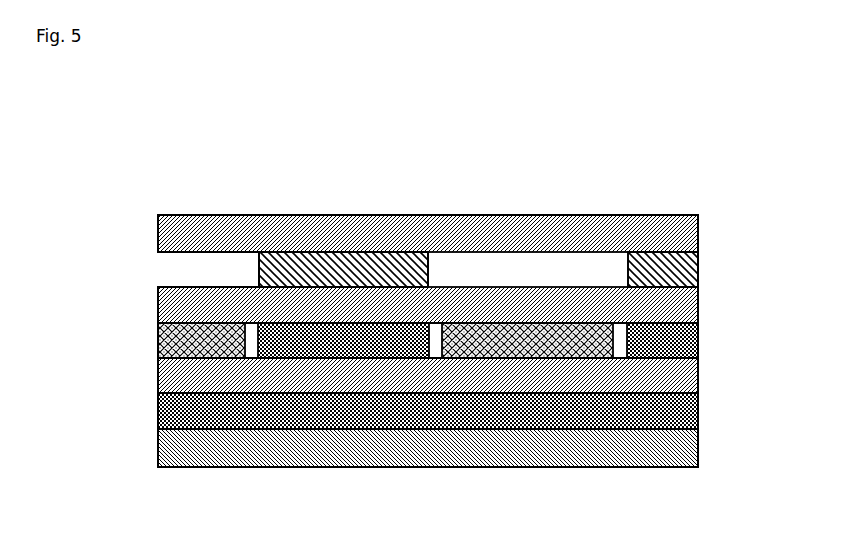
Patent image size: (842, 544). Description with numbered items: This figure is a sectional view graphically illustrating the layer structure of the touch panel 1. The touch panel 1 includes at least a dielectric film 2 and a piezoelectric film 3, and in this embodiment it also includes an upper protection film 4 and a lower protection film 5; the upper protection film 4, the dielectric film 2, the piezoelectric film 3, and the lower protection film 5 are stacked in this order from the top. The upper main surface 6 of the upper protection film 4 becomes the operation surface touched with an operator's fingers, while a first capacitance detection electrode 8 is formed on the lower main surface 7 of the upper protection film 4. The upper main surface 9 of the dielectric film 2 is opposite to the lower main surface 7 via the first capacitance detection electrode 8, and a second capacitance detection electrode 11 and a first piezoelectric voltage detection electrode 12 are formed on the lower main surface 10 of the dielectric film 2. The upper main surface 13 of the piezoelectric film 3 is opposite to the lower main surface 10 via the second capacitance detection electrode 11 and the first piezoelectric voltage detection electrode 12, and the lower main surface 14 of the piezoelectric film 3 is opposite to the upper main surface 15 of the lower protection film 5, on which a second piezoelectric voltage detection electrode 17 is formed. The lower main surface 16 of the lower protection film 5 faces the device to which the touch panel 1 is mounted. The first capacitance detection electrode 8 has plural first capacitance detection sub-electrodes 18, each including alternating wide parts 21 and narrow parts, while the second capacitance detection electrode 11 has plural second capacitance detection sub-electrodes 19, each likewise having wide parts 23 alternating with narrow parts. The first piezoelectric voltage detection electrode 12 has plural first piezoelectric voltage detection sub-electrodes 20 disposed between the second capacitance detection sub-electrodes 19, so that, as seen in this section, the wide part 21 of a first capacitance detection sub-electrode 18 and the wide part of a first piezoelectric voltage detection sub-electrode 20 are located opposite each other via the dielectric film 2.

The touch panel 1 is at (428, 293).
The dielectric film 2 is at (698, 297).
The piezoelectric film 3 is at (698, 378).
The upper protection film 4 is at (698, 223).
The lower protection film 5 is at (698, 447).
The upper main surface 6 is at (180, 216).
The lower main surface 7 is at (177, 254).
The first capacitance detection electrode 8 is at (700, 265).
The upper main surface 9 is at (185, 281).
The lower main surface 10 is at (698, 338).
The second capacitance detection electrode 11 is at (158, 338).
The first piezoelectric voltage detection electrode 12 is at (700, 352).
The upper main surface 13 is at (173, 348).
The lower main surface 14 is at (158, 408).
The upper main surface 15 is at (698, 416).
The lower main surface 16 is at (681, 468).
The second piezoelectric voltage detection electrode 17 is at (158, 420).
The first capacitance detection sub-electrodes 18 is at (335, 253).
The second capacitance detection sub-electrodes 19 is at (215, 324).
The first piezoelectric voltage detection sub-electrodes 20 is at (300, 358).
The wide parts 21 is at (397, 262).
The wide parts 23 is at (580, 333).